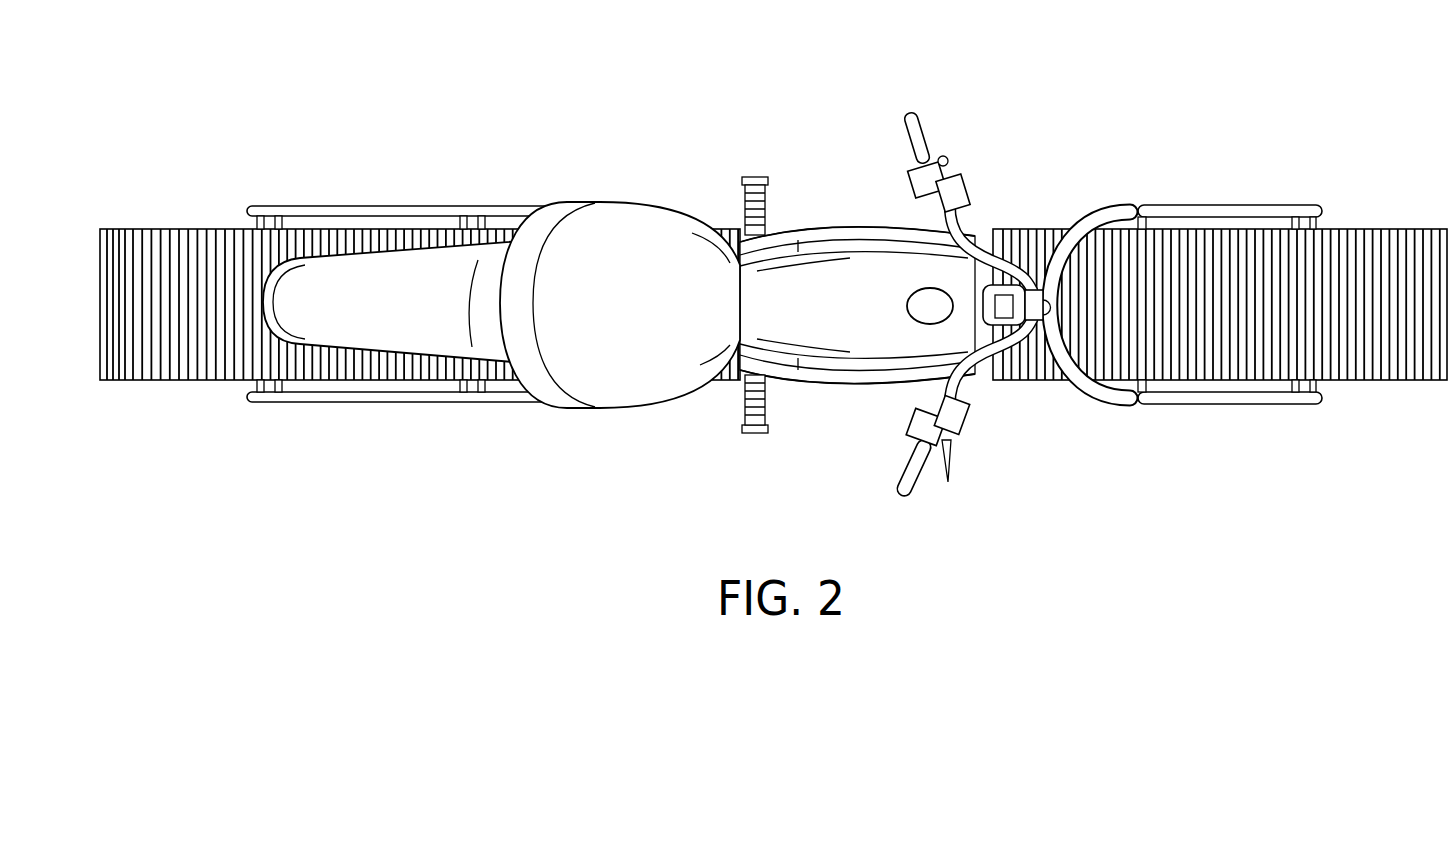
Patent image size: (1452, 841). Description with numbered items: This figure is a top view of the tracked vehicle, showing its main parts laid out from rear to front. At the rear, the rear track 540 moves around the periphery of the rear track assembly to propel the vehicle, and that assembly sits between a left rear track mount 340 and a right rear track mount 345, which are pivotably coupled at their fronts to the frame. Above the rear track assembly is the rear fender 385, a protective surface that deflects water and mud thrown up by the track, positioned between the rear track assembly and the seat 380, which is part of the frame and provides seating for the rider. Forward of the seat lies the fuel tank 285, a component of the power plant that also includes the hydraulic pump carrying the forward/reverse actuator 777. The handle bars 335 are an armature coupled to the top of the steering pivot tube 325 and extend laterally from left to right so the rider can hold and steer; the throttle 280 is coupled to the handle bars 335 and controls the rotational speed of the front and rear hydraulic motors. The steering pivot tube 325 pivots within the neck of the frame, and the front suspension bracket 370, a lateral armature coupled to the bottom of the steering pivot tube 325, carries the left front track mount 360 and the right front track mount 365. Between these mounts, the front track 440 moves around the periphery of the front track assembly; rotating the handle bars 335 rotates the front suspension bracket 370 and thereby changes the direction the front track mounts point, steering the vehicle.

The rear track 540 is at (178, 232).
The front track 440 is at (1383, 243).
The left rear track mount 340 is at (428, 215).
The right rear track mount 345 is at (413, 397).
The left front track mount 360 is at (1212, 215).
The right front track mount 365 is at (1247, 405).
The rear fender 385 is at (330, 323).
The seat 380 is at (643, 245).
The fuel tank 285 is at (848, 277).
The front suspension bracket 370 is at (1103, 213).
The handle bars 335 is at (963, 222).
The forward/reverse actuator 777 is at (950, 165).
The throttle 280 is at (950, 480).
The steering pivot tube 325 is at (1037, 378).